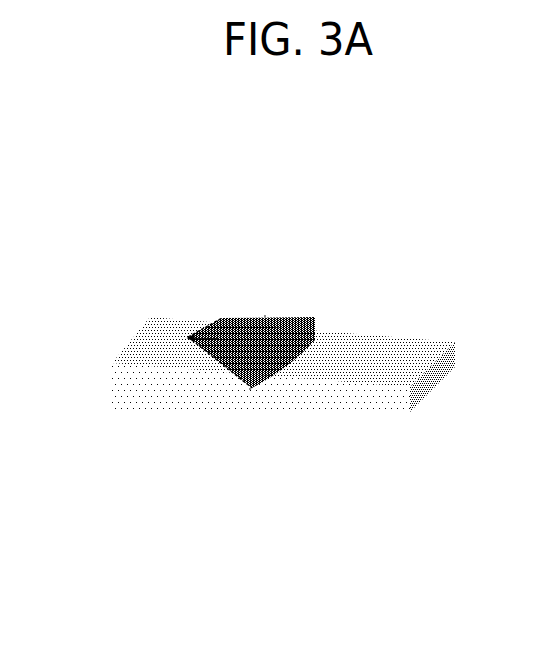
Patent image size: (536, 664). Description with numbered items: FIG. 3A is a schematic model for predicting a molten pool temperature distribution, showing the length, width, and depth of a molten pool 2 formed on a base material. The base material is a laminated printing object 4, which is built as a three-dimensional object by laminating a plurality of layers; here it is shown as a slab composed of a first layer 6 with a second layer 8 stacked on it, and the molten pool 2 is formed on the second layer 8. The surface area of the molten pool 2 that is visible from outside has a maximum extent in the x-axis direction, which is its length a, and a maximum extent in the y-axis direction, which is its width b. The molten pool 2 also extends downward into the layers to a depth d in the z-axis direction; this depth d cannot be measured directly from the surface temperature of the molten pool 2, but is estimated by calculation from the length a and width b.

The molten pool 2 is at (220, 318).
The laminated printing object 4 is at (244, 367).
The first layer 6 is at (108, 372).
The second layer 8 is at (108, 398).
The length a is at (193, 336).
The width b is at (267, 304).
The depth d is at (236, 398).